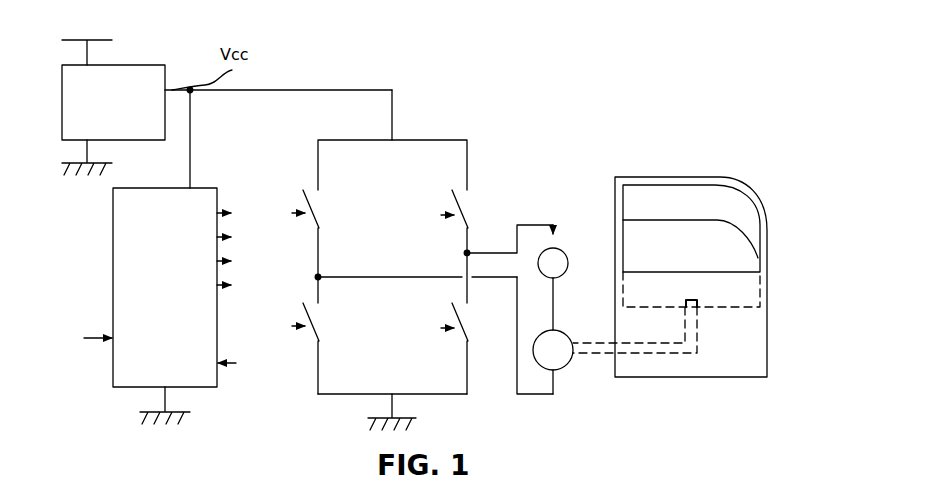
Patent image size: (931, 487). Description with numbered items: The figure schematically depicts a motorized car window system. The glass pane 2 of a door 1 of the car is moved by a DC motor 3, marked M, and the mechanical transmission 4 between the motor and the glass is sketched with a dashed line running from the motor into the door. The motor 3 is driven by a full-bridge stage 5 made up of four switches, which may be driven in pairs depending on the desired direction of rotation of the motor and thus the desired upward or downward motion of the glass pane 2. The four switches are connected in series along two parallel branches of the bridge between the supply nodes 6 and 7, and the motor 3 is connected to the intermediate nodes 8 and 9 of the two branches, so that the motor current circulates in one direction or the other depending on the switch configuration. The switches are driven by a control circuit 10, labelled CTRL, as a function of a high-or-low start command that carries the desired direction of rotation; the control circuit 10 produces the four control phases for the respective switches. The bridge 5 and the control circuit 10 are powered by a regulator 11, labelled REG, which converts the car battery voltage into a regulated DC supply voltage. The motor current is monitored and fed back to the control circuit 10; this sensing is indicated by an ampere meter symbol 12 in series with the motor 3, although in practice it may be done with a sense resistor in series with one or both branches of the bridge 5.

The door 1 is at (767, 315).
The glass pane 2 is at (730, 248).
The DC motor 3 is at (566, 364).
The mechanical transmission 4 is at (653, 353).
The full-bridge stage 5 is at (492, 151).
The supply node 6 is at (392, 118).
The supply node 7 is at (392, 400).
The intermediate node 8 is at (553, 306).
The intermediate node 9 is at (555, 395).
The control circuit 10 is at (113, 231).
The regulator 11 is at (140, 65).
The ampere meter symbol 12 is at (568, 262).